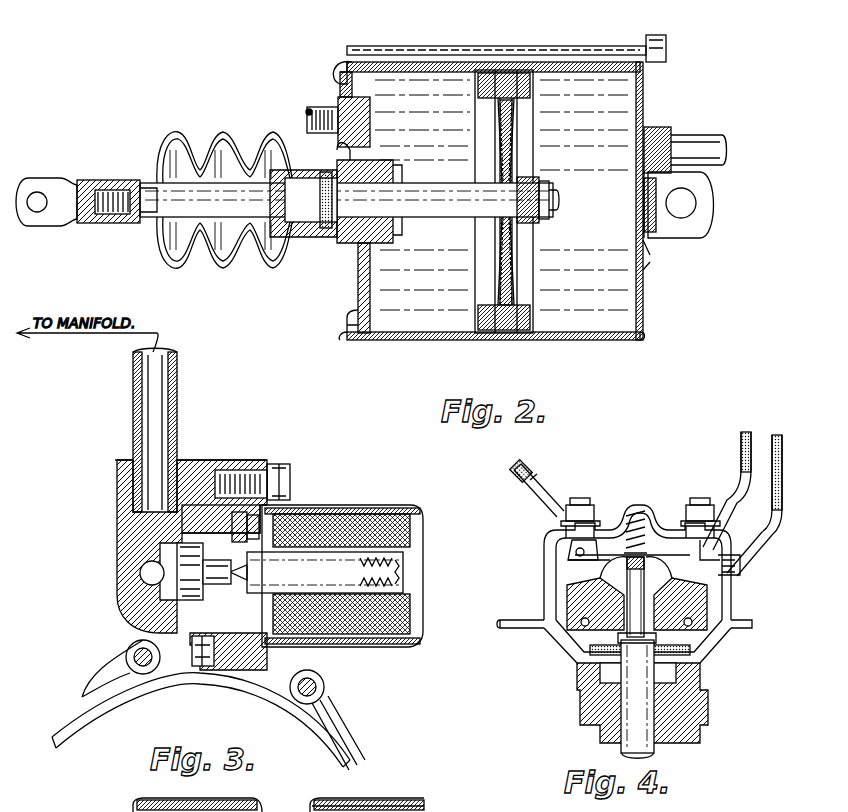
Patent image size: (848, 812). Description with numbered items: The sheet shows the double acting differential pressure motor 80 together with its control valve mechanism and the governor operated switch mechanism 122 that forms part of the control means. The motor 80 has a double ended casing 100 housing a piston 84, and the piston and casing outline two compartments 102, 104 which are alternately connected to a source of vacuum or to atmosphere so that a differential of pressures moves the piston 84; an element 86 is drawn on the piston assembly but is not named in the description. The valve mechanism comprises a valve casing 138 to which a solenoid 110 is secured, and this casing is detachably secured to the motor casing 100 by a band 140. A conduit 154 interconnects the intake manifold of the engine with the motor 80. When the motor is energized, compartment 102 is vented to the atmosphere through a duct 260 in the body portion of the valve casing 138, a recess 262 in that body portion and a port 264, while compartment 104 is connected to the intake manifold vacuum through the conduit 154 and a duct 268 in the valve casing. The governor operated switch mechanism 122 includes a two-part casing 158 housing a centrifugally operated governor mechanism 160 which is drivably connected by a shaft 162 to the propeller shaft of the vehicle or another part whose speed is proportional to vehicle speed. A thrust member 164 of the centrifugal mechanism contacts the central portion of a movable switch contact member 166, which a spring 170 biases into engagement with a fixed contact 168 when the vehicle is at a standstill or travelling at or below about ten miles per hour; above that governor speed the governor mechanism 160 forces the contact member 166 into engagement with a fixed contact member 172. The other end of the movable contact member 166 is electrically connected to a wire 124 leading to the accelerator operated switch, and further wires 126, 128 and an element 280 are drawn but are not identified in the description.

In FIG. 2, the motor 80 is at (551, 343).
In FIG. 2, the piston 84 is at (472, 275).
In FIG. 2, the push rod 86 is at (338, 207).
In FIG. 2, the double ended casing 100 is at (614, 340).
In FIG. 2, the compartment 102 is at (413, 105).
In FIG. 2, the compartment 104 is at (624, 117).
In FIG. 3, the solenoid 110 is at (466, 484).
In FIG. 4, the governor operated switch mechanism 122 is at (554, 653).
In FIG. 4, the wire 124 is at (524, 468).
In FIG. 4, the lead wire 126 is at (773, 443).
In FIG. 4, the lead wire 128 is at (747, 443).
In FIG. 3, the valve casing 138 is at (123, 552).
In FIG. 3, the band 140 is at (68, 707).
In FIG. 3, the conduit 154 is at (173, 390).
In FIG. 4, the two-part casing 158 is at (554, 587).
In FIG. 4, the centrifugally operated governor mechanism 160 is at (694, 620).
In FIG. 4, the shaft 162 is at (681, 720).
In FIG. 4, the thrust member 164 is at (627, 572).
In FIG. 4, the movable switch contact member 166 is at (671, 520).
In FIG. 4, the fixed contact 168 is at (687, 550).
In FIG. 4, the spring 170 is at (631, 510).
In FIG. 4, the fixed contact member 172 is at (717, 527).
In FIG. 3, the duct 260 is at (200, 463).
In FIG. 3, the recess 262 is at (253, 513).
In FIG. 3, the port 264 is at (213, 590).
In FIG. 3, the duct 268 is at (148, 578).
In FIG. 3, the plate 280 is at (403, 803).